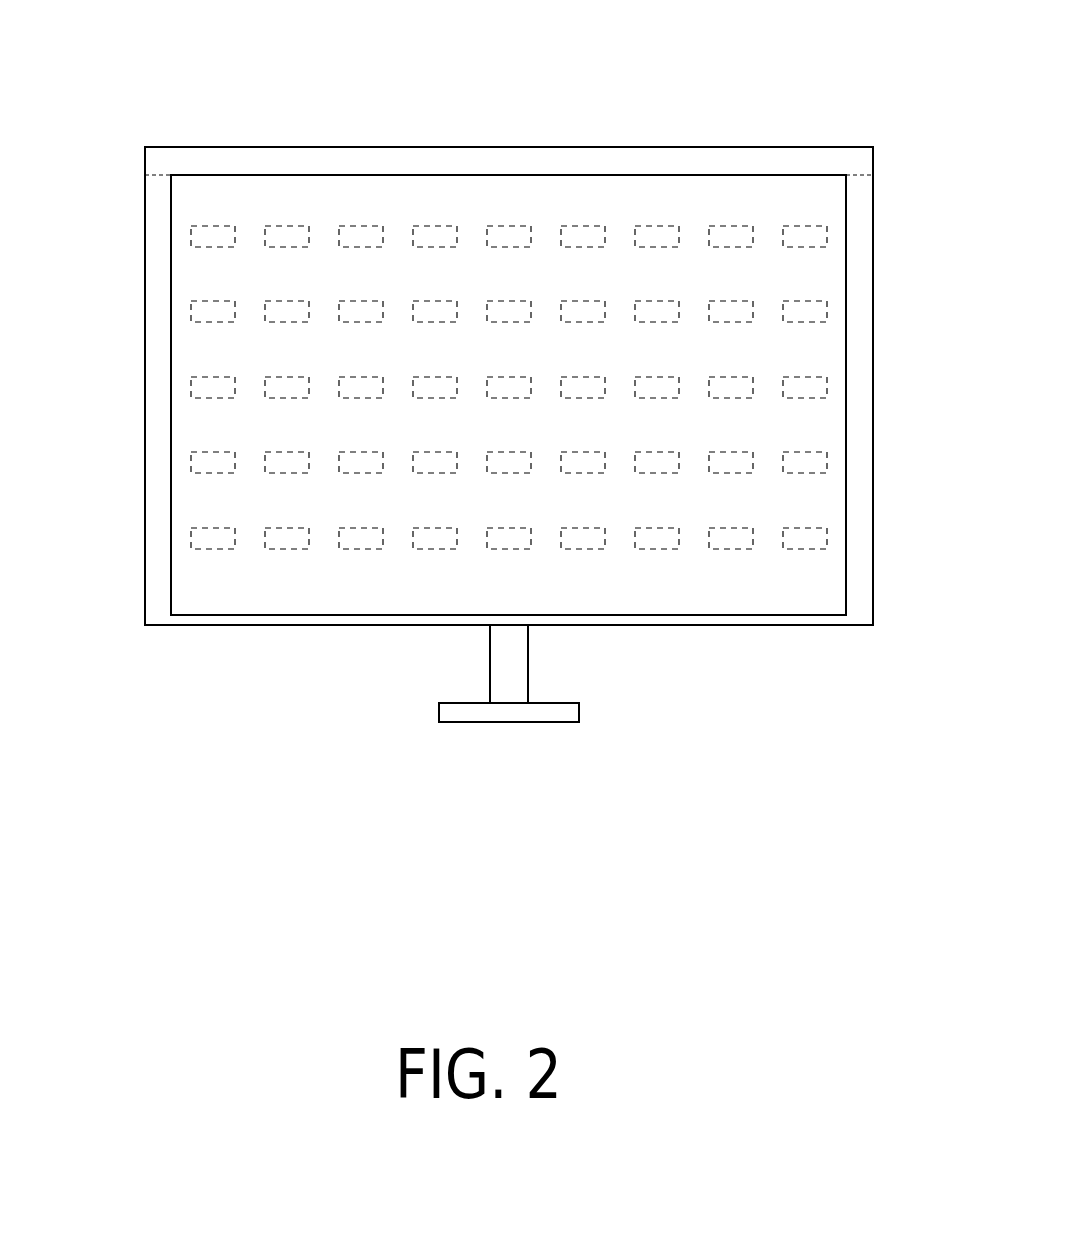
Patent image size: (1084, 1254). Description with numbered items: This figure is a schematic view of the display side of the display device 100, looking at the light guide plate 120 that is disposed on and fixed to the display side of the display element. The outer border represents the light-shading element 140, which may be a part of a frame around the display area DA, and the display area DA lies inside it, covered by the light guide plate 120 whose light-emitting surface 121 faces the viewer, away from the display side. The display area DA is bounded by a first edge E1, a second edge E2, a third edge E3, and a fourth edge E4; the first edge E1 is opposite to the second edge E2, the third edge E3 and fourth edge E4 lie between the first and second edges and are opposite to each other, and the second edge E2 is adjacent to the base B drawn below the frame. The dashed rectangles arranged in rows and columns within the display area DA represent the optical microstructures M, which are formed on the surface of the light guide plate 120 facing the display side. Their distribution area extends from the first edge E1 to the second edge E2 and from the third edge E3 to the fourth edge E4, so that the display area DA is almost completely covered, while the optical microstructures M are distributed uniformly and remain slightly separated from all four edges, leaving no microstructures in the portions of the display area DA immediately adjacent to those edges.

The display device 100 is at (500, 395).
The light-shading element 140 is at (288, 163).
The light guide plate 120 is at (641, 200).
The light-emitting surface 121 is at (509, 316).
The optical microstructures M is at (213, 235).
The first edge E1 is at (510, 175).
The second edge E2 is at (692, 616).
The third edge E3 is at (846, 385).
The fourth edge E4 is at (172, 385).
The display area DA is at (510, 390).
The base B is at (505, 662).